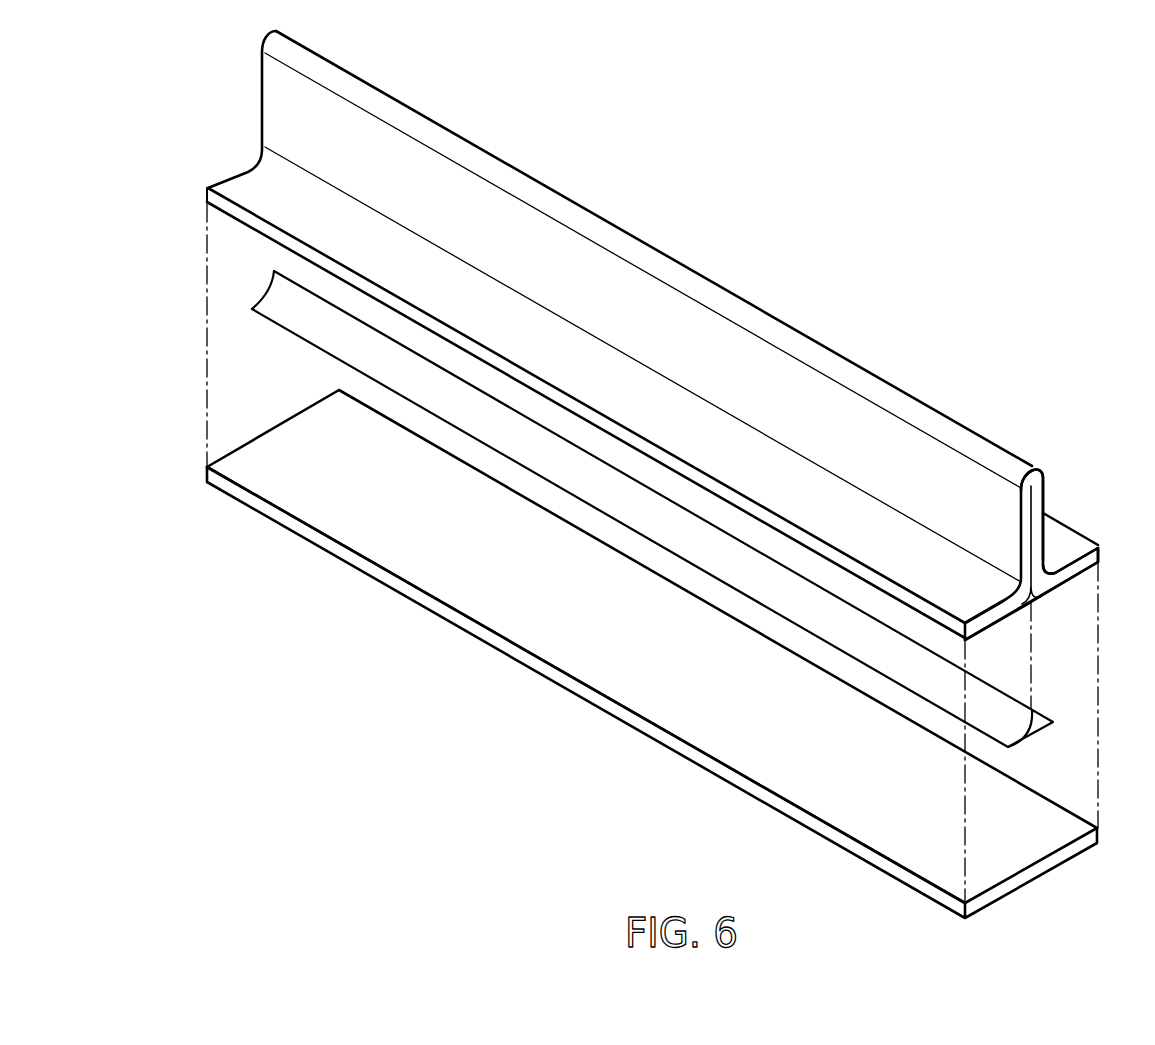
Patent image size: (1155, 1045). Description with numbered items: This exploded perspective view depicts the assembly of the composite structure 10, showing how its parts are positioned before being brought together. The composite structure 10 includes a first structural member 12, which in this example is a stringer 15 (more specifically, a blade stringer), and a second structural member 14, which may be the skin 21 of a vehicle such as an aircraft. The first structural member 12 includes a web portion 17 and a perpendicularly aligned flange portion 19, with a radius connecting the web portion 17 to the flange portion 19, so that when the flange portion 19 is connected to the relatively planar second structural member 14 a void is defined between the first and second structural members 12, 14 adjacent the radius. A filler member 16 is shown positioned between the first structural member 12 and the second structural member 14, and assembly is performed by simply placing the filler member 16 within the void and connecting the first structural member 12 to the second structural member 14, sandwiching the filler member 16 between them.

The composite structure 10 is at (867, 292).
The first structural member 12 is at (669, 466).
The second structural member 14 is at (1034, 806).
The stringer 15 is at (1043, 516).
The filler member 16 is at (1043, 714).
The web portion 17 is at (1043, 486).
The flange portion 19 is at (1073, 545).
The skin 21 is at (892, 852).